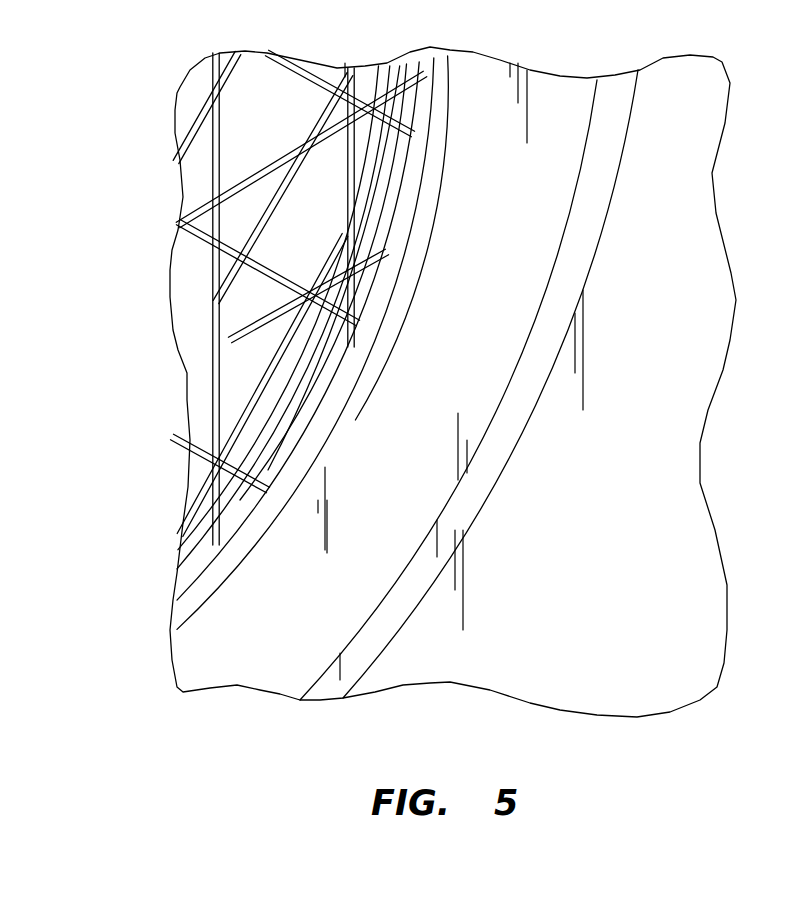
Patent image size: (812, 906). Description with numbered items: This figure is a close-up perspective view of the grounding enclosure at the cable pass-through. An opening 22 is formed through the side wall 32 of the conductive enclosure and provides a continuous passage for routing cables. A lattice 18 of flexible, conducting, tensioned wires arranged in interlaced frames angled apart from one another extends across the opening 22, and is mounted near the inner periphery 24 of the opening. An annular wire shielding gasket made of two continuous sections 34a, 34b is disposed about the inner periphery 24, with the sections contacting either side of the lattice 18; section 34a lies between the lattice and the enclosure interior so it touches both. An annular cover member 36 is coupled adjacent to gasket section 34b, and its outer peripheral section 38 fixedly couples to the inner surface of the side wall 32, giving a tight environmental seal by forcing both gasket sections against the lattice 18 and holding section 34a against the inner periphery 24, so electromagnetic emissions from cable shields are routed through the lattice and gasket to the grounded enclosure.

The lattice 18 is at (220, 173).
The opening 22 is at (228, 122).
The inner periphery 24 is at (265, 483).
The side wall 32 is at (672, 378).
The gasket section 34a is at (282, 423).
The gasket section 34b is at (288, 463).
The cover member 36 is at (555, 187).
The outer peripheral section 38 is at (588, 237).